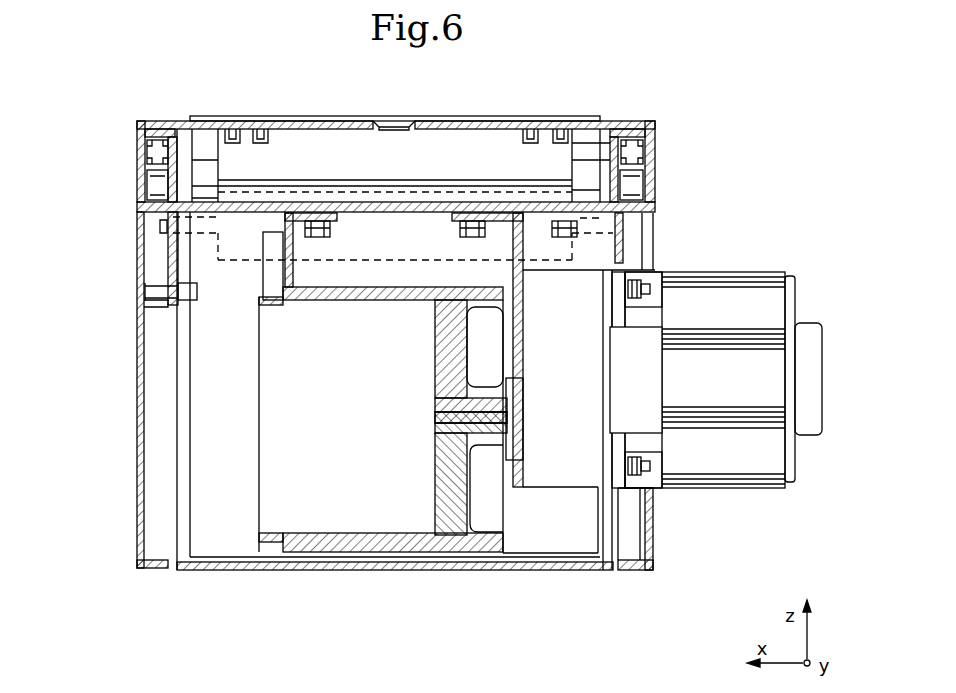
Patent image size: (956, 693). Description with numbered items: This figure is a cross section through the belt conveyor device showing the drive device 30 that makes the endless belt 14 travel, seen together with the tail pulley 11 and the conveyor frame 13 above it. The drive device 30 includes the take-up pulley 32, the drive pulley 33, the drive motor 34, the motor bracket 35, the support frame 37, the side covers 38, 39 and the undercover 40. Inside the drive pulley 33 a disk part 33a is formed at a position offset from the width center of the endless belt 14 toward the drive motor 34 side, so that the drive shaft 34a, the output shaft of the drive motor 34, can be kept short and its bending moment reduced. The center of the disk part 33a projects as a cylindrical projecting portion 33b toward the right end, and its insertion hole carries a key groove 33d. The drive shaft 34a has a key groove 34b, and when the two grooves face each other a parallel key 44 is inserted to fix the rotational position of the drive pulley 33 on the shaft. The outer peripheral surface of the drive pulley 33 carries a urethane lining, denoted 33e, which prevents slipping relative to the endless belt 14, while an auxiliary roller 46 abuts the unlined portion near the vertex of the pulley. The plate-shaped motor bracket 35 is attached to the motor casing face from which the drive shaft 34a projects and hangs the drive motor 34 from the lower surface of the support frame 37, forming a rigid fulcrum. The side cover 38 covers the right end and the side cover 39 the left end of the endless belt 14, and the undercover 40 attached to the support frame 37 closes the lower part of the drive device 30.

The tail pulley 11 is at (487, 128).
The conveyor frame 13 is at (643, 121).
The endless belt 14 is at (583, 118).
The drive device 30 is at (503, 590).
The take-up pulley 32 is at (242, 262).
The drive pulley 33 is at (406, 388).
The disk part 33a is at (440, 333).
The projecting portion 33b is at (487, 450).
The key groove 33d is at (438, 403).
The lining processed portion 33e is at (383, 287).
The drive motor 34 is at (722, 297).
The drive shaft 34a is at (438, 428).
The key groove 34b is at (438, 420).
The motor bracket 35 is at (513, 252).
The support frame 37 is at (137, 207).
The side cover 38 is at (650, 518).
The side cover 39 is at (137, 432).
The undercover 40 is at (245, 572).
The parallel key 44 is at (508, 410).
The auxiliary roller 46 is at (263, 238).